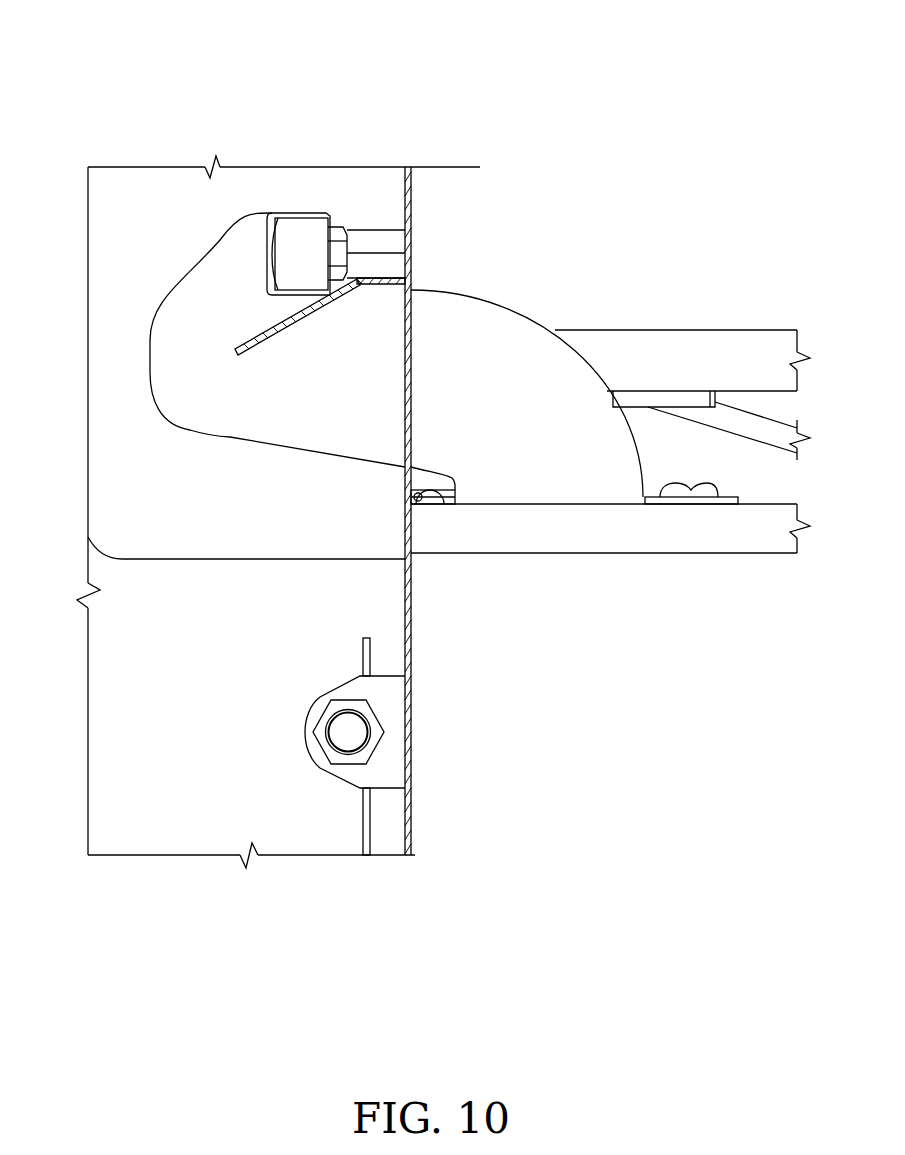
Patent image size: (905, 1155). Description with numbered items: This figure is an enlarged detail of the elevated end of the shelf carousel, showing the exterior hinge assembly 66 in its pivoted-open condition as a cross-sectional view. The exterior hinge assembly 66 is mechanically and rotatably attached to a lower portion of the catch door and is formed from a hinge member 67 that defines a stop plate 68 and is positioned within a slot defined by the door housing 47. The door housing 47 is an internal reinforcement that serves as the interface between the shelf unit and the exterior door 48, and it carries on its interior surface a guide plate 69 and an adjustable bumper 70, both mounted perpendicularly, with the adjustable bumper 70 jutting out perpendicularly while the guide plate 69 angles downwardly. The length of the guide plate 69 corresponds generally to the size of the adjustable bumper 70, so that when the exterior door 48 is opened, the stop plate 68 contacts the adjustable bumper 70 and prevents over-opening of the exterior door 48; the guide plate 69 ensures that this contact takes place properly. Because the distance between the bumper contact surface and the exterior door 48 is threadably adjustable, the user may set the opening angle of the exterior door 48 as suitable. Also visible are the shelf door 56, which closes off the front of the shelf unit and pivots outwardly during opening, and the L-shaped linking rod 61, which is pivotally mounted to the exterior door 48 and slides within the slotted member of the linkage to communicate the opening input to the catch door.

The exterior hinge assembly 66 is at (56, 70).
The door housing 47 is at (102, 520).
The exterior door 48 is at (612, 535).
The shelf door 56 is at (739, 340).
The L-shaped linking rod 61 is at (743, 428).
The hinge member 67 is at (512, 328).
The stop plate 68 is at (274, 216).
The guide plate 69 is at (292, 322).
The adjustable bumper 70 is at (298, 230).